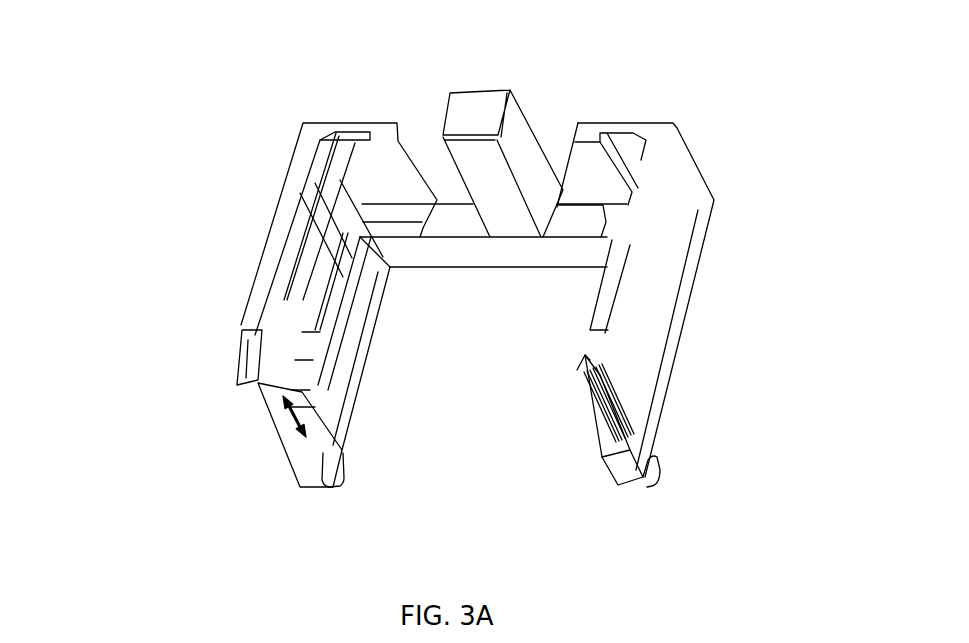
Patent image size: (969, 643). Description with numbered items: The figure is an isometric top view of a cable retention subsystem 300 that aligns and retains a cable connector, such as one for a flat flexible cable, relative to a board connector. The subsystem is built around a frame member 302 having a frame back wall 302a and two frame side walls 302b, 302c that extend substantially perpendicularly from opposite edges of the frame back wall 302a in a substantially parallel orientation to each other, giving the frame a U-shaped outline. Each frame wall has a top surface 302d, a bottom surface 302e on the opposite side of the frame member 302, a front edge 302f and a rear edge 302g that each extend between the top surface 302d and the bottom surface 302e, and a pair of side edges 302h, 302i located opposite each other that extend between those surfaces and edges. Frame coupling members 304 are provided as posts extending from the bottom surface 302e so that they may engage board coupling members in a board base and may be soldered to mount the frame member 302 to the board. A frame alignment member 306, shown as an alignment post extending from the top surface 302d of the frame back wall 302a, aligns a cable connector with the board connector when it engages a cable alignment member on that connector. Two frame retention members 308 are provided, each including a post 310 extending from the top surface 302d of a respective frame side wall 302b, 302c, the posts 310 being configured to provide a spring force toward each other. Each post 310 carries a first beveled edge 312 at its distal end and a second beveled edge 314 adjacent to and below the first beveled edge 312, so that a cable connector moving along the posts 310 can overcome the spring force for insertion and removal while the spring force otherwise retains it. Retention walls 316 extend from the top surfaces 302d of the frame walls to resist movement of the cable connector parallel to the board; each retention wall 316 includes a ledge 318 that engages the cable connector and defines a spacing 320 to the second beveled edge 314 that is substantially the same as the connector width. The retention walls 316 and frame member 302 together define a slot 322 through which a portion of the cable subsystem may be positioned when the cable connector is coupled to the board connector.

The cable retention subsystem 300 is at (178, 103).
The frame member 302 is at (717, 237).
The frame back wall 302a is at (567, 263).
The frame side wall 302b is at (373, 305).
The frame side wall 302c is at (660, 405).
The top surface 302d is at (455, 218).
The bottom surface 302e is at (546, 262).
The front edge 302f is at (492, 243).
The rear edge 302g is at (582, 207).
The side edge 302h is at (608, 463).
The side edge 302i is at (357, 335).
The frame coupling member 304 is at (587, 272).
The frame alignment member 306 is at (463, 96).
The frame retention member 308 is at (265, 378).
The post 310 is at (263, 437).
The first beveled edge 312 is at (250, 358).
The second beveled edge 314 is at (270, 418).
The retention wall 316 is at (340, 122).
The ledge 318 is at (310, 370).
The spacing 320 is at (307, 428).
The slot 322 is at (467, 503).